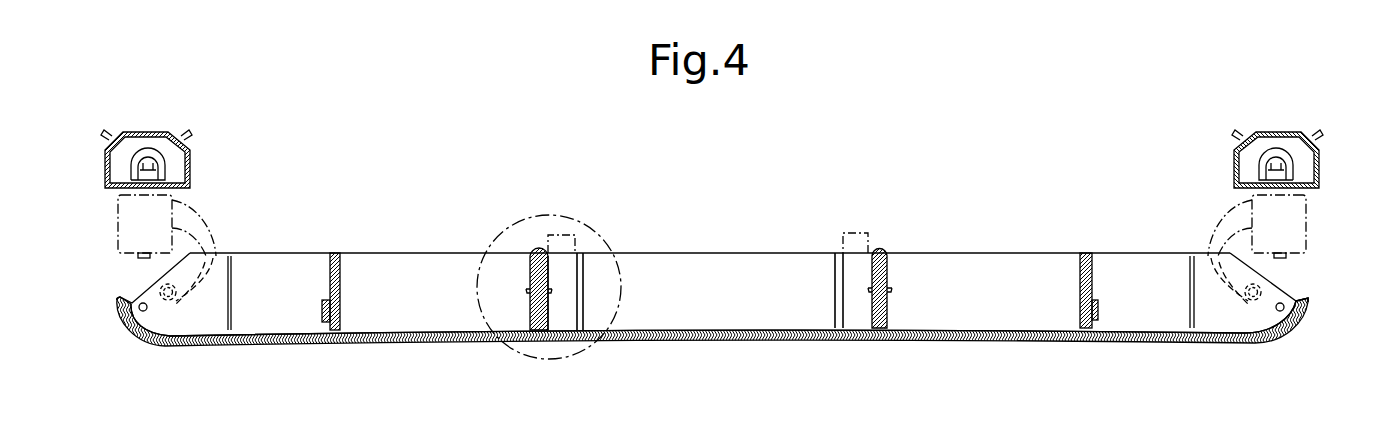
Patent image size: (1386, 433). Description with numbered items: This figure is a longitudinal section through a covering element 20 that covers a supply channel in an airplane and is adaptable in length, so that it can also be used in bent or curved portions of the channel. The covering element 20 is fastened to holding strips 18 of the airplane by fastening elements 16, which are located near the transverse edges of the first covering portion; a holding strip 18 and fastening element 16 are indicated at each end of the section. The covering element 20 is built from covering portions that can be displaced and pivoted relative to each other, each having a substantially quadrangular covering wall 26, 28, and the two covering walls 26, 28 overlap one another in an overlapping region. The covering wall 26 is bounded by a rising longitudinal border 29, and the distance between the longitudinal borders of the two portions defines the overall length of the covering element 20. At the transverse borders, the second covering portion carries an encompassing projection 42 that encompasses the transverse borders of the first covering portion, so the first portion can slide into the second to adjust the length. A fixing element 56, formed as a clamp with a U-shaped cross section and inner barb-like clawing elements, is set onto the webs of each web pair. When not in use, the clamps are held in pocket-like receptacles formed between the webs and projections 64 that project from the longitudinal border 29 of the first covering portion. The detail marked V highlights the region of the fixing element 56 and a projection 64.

The fastening element 16 is at (232, 220).
The holding strip 18 is at (190, 158).
The covering element 20 is at (984, 228).
The covering wall 26 is at (945, 329).
The covering wall 28 is at (985, 341).
The longitudinal border 29 is at (717, 273).
The encompassing projection 42 is at (1303, 292).
The fixing element 56 is at (508, 275).
The projection 64 is at (585, 283).
The detail view circle V is at (513, 225).